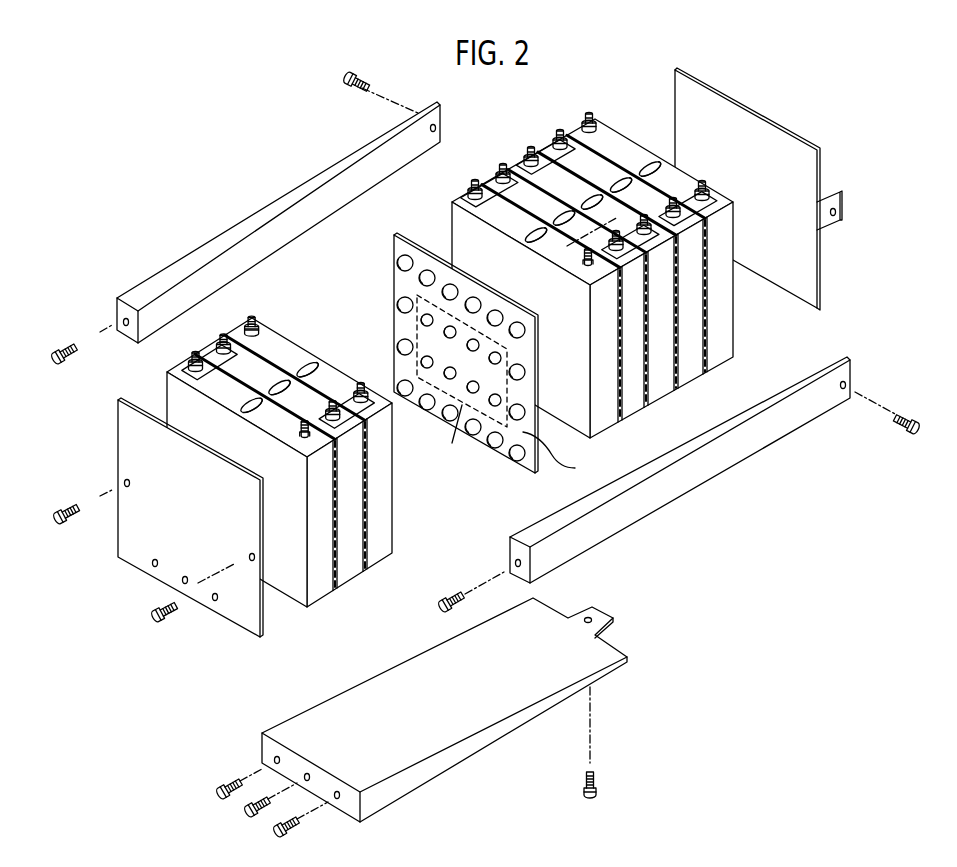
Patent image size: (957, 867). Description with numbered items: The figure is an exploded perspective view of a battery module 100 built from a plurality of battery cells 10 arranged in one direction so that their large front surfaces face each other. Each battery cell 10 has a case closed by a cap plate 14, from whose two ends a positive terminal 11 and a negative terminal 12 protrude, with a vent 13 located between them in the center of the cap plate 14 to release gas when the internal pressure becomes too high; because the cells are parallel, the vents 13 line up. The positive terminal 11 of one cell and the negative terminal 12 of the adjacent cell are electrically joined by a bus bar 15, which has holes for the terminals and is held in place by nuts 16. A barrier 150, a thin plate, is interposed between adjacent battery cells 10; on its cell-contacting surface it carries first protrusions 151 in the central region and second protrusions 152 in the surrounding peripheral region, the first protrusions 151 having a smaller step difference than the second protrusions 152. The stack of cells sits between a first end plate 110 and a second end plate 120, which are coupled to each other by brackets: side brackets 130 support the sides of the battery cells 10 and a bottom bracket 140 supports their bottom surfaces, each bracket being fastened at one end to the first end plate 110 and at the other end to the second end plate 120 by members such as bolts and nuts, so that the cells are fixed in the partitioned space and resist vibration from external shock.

The battery module 100 is at (113, 160).
The battery cell 10 is at (380, 513).
The positive terminal 11 is at (252, 328).
The negative terminal 12 is at (361, 384).
The vent 13 is at (303, 367).
The cap plate 14 is at (282, 337).
The bus bar 15 is at (207, 354).
The nut 16 is at (246, 326).
The first end plate 110 is at (252, 607).
The second end plate 120 is at (822, 257).
The side bracket 130 is at (113, 306).
The bottom bracket 140 is at (278, 735).
The barrier 150 is at (386, 290).
The first protrusion 151 is at (420, 321).
The second protrusion 152 is at (397, 264).